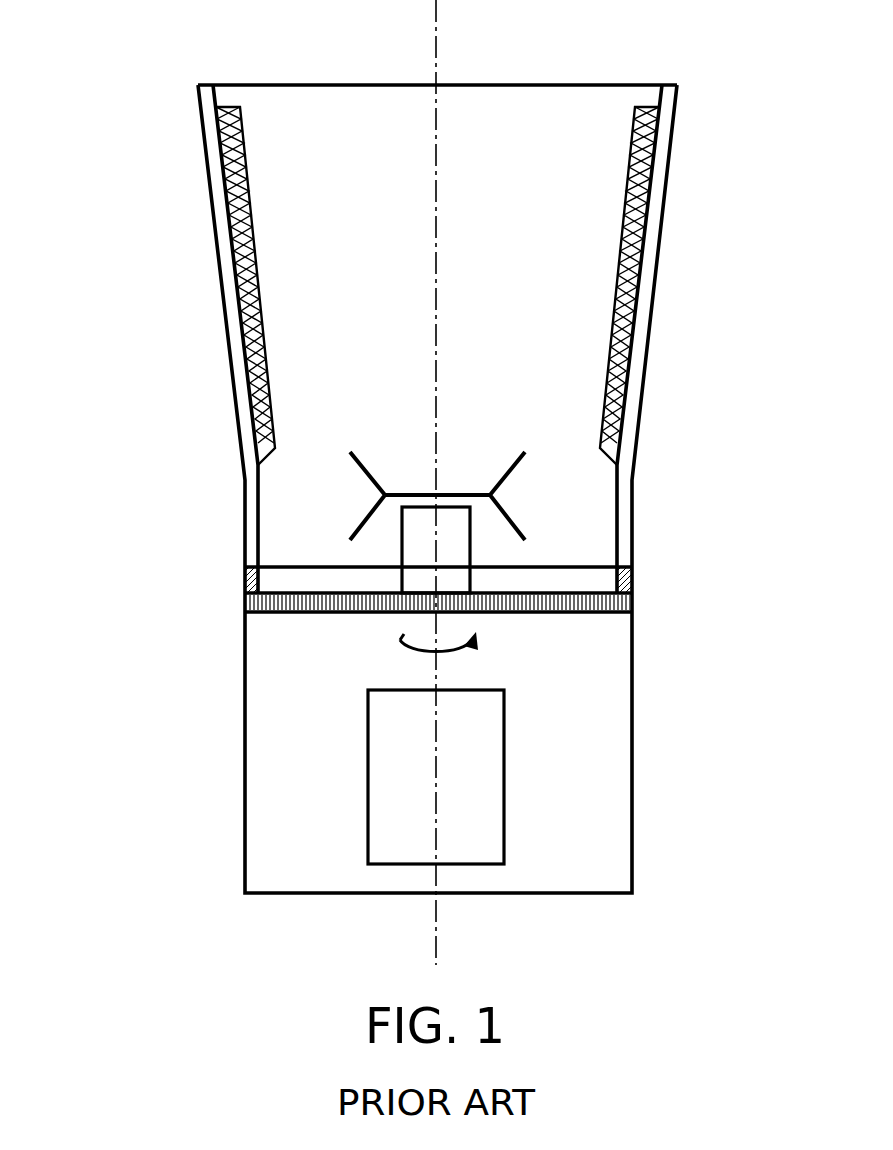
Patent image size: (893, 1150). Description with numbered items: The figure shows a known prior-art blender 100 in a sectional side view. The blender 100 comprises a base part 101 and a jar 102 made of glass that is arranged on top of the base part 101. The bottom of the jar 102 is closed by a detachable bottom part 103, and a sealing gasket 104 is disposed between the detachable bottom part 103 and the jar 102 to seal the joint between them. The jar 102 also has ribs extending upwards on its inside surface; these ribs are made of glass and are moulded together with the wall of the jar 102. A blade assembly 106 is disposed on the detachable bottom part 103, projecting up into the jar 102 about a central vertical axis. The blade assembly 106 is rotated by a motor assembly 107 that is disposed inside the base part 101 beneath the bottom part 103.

The blender 100 is at (108, 60).
The base part 101 is at (634, 756).
The jar 102 is at (660, 270).
The detachable bottom part 103 is at (634, 601).
The sealing gasket 104 is at (245, 572).
The blade assembly 106 is at (414, 492).
The motor assembly 107 is at (504, 820).